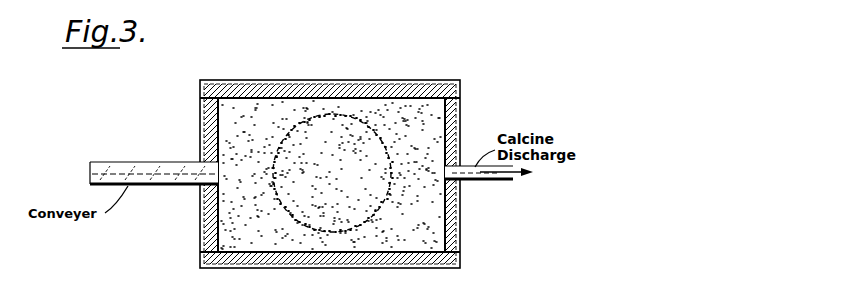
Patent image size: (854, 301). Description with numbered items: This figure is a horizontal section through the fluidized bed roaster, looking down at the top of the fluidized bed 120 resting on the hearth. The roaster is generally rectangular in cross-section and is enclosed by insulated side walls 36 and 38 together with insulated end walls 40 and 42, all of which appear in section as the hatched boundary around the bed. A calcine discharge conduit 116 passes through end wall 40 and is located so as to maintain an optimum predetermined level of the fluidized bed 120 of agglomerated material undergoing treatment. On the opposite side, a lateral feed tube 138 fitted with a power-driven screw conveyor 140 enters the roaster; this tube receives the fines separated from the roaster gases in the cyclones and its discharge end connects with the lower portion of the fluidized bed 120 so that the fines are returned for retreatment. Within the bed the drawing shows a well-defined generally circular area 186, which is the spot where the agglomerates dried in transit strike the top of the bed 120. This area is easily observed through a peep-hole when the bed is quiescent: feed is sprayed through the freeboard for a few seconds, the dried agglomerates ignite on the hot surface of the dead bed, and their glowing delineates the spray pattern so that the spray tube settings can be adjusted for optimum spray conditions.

The side wall 36 is at (333, 268).
The side wall 38 is at (372, 96).
The end wall 40 is at (450, 227).
The end wall 42 is at (205, 233).
The calcine discharge conduit 116 is at (494, 180).
The fluidized bed 120 is at (429, 229).
The lateral feed tube 138 is at (118, 162).
The screw conveyor 140 is at (135, 162).
The circular area 186 is at (358, 148).